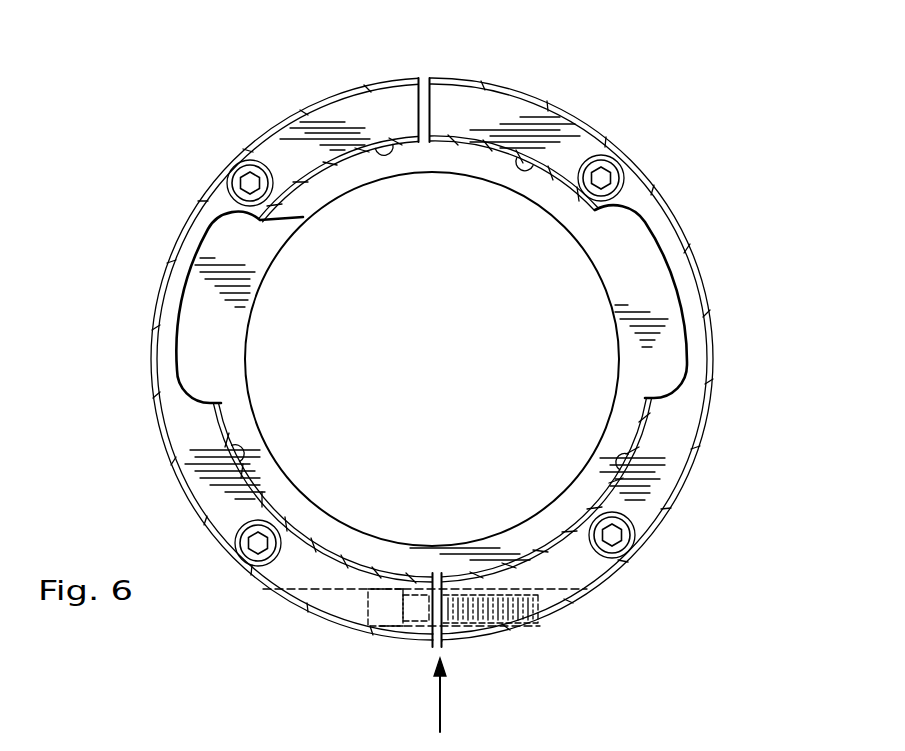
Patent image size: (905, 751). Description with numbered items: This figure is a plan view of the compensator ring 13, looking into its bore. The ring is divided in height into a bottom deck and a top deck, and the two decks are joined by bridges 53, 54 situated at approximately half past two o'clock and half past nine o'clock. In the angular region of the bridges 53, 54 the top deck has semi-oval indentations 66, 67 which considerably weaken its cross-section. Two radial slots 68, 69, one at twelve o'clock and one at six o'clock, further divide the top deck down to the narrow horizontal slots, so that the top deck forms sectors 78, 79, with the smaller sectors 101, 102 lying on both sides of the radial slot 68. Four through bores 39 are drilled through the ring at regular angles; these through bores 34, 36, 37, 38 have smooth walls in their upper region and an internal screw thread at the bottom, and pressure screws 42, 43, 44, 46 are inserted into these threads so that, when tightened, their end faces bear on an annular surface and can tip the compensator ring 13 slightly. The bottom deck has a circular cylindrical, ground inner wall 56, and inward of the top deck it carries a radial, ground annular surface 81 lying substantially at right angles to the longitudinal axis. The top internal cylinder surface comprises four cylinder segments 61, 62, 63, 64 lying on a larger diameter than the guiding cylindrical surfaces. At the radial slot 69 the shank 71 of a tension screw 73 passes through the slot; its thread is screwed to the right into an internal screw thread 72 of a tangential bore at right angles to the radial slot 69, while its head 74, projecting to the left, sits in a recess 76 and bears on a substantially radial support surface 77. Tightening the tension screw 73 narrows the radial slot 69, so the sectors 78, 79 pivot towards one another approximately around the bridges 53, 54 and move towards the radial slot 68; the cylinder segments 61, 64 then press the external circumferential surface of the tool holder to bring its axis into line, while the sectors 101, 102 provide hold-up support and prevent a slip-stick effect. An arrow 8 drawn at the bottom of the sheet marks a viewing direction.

The viewing direction arrow 8 is at (445, 698).
The compensator ring 13 is at (200, 128).
The through bore 34 is at (263, 527).
The through bore 36 is at (260, 194).
The through bore 37 is at (594, 203).
The through bore 38 is at (600, 530).
The through bores 39 is at (622, 172).
The pressure screw 42 is at (250, 160).
The pressure screw 43 is at (275, 572).
The pressure screw 44 is at (630, 545).
The pressure screw 46 is at (600, 233).
The bridge 53 is at (690, 282).
The bridge 54 is at (165, 302).
The inner wall 56 is at (247, 357).
The cylinder segment 61 is at (232, 452).
The cylinder segment 62 is at (388, 140).
The cylinder segment 63 is at (545, 168).
The cylinder segment 64 is at (668, 462).
The indentation 66 is at (652, 255).
The indentation 67 is at (185, 345).
The radial slot 68 is at (432, 76).
The radial slot 69 is at (433, 655).
The shank 71 is at (435, 573).
The internal screw thread 72 is at (500, 595).
The tension screw 73 is at (370, 608).
The head 74 is at (387, 597).
The recess 76 is at (330, 612).
The support surface 77 is at (372, 640).
The sector 78 is at (222, 503).
The sector 79 is at (650, 512).
The annular surface 81 is at (620, 363).
The sector 101 is at (322, 107).
The sector 102 is at (503, 103).